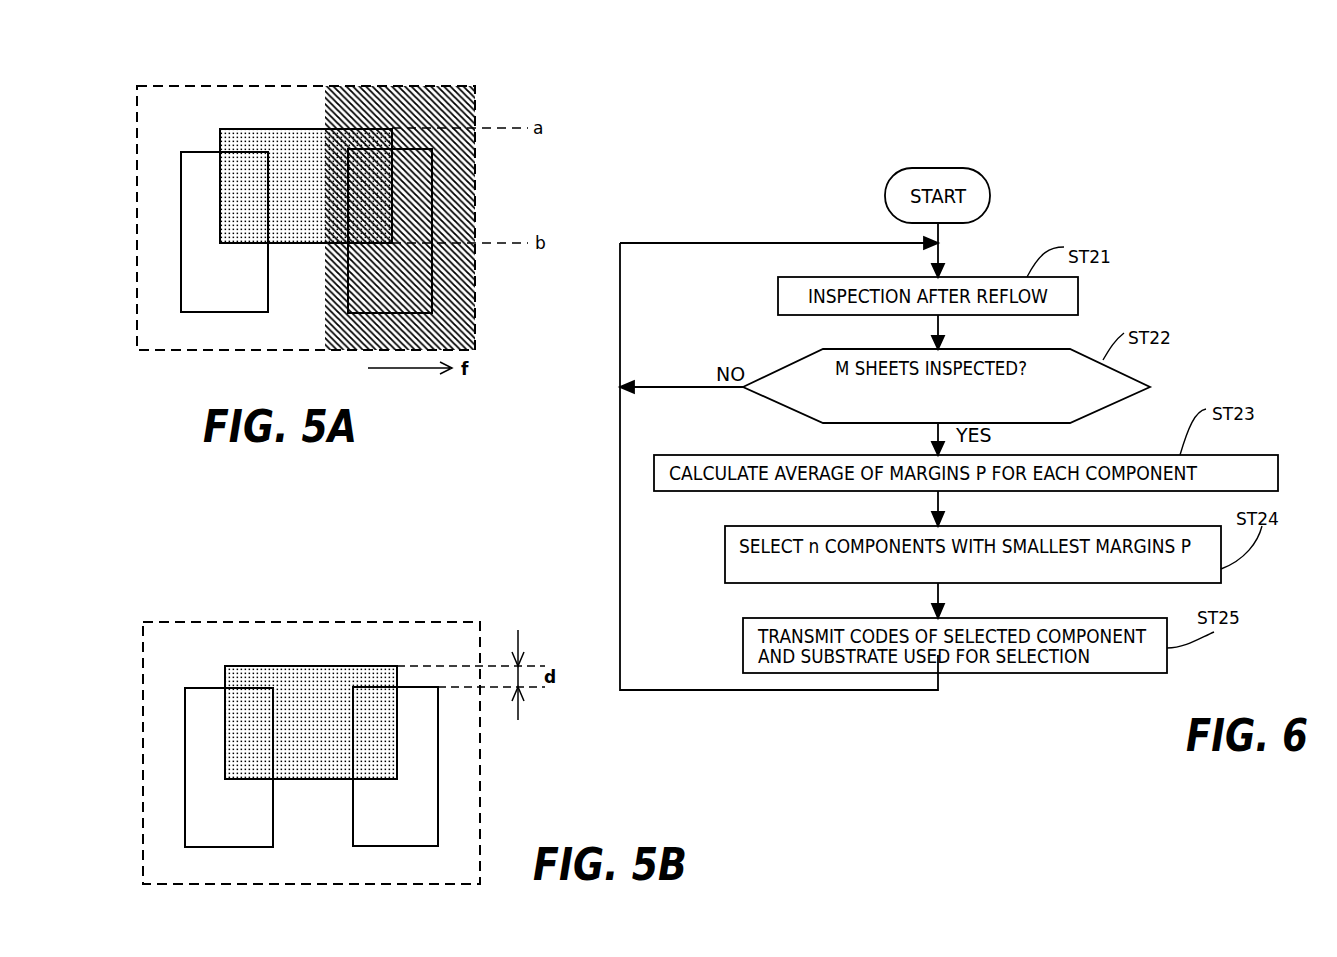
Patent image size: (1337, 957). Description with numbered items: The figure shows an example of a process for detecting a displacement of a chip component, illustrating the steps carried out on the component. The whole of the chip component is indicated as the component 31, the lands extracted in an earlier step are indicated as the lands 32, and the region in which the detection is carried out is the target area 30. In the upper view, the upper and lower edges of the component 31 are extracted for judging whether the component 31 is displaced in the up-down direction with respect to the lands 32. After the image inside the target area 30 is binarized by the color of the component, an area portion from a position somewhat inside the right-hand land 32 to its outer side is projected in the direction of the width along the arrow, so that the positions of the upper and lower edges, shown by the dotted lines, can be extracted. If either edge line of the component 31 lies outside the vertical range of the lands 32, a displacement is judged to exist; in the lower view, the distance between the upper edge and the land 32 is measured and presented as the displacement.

In FIG. 5A, the target area 30 is at (193, 78).
In FIG. 5B, the target area 30 is at (199, 620).
In FIG. 5A, the component 31 is at (286, 128).
In FIG. 5B, the component 31 is at (290, 675).
In FIG. 5A, the lands 32 is at (181, 241).
In FIG. 5B, the lands 32 is at (185, 803).